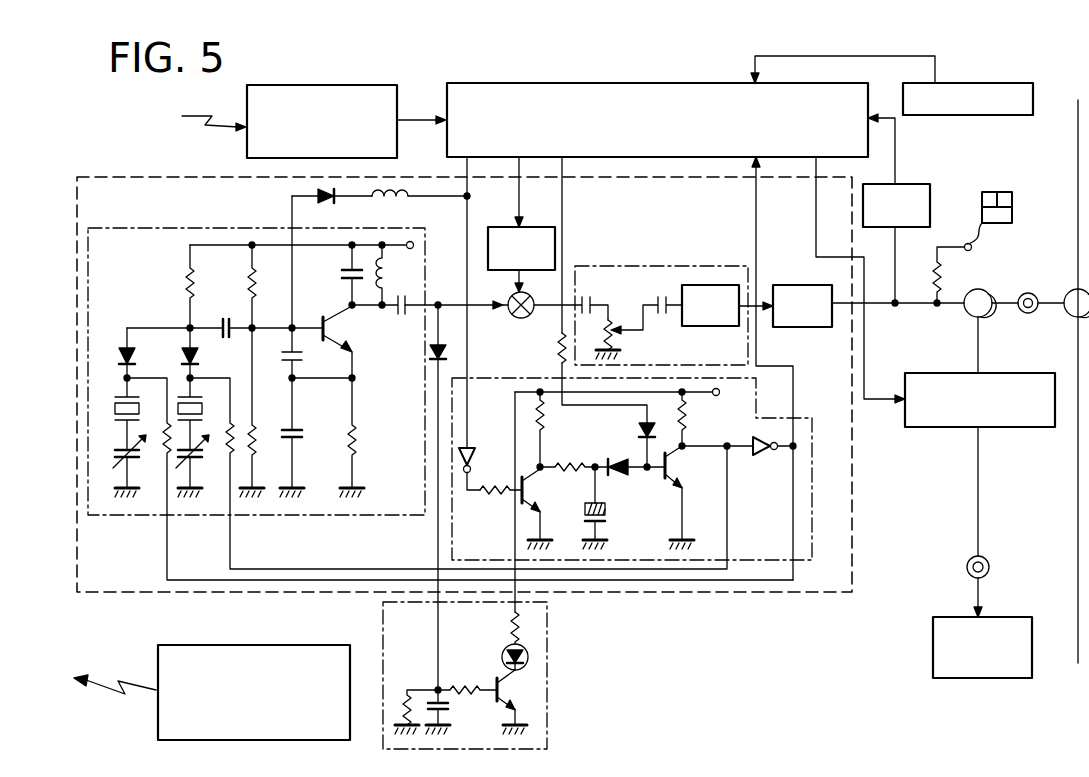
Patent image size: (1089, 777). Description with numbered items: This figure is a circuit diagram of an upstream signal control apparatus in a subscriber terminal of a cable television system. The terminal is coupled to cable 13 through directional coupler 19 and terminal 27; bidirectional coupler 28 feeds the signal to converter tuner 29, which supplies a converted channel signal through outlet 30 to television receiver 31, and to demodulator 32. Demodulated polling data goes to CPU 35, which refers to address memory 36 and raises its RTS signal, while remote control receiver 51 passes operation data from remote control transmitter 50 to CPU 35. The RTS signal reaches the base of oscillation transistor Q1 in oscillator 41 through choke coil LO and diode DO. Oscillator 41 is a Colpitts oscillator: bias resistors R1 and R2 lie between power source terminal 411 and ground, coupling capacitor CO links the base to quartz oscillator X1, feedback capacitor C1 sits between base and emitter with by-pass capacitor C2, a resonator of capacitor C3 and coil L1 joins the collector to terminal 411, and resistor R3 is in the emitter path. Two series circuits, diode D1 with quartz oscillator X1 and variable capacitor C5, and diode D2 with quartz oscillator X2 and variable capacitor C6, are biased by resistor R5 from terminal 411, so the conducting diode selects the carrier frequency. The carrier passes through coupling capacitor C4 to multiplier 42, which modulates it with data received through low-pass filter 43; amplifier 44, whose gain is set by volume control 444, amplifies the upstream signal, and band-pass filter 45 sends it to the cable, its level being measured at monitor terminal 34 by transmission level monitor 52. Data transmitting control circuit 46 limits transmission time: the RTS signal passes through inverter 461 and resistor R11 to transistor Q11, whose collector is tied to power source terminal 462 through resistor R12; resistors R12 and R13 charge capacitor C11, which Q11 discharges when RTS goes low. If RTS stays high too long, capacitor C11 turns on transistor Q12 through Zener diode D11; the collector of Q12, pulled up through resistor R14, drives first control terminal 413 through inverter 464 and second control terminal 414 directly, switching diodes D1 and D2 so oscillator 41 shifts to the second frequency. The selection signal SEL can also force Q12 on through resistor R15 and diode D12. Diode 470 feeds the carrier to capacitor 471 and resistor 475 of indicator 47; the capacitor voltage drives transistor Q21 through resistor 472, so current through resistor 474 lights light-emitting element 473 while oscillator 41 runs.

The remote control receiver 51 is at (351, 85).
The CPU 35 is at (660, 83).
The address memory 36 is at (980, 83).
The demodulator 32 is at (920, 184).
The transmission level monitor 52 is at (997, 192).
The monitor terminal 34 is at (972, 247).
The cable 13 is at (1078, 157).
The bidirectional coupler 28 is at (967, 313).
The terminal 27 is at (1030, 313).
The directional coupler 19 is at (1068, 293).
The converter tuner 29 is at (1000, 373).
The outlet 30 is at (990, 562).
The television receiver 31 is at (947, 617).
The oscillator 41 is at (195, 228).
The power source terminal 411 is at (414, 244).
The first control terminal 413 is at (167, 541).
The second control terminal 414 is at (230, 538).
The multiplier 42 is at (512, 315).
The low-pass filter 43 is at (538, 227).
The amplifier 44 is at (676, 266).
The volume control 444 is at (622, 315).
The band-pass filter 45 is at (792, 285).
The data transmitting control circuit 46 is at (764, 418).
The inverter 461 is at (471, 450).
The power source terminal 462 is at (690, 408).
The inverter 464 is at (762, 456).
The indicator 47 is at (547, 650).
The diode 470 is at (432, 362).
The capacitor 471 is at (450, 708).
The resistor 472 is at (464, 688).
The light-emitting element 473 is at (504, 650).
The resistor 474 is at (512, 614).
The resistor 475 is at (407, 695).
The remote control transmitter 50 is at (303, 645).
The diode DO is at (316, 193).
The choke coil LO is at (397, 202).
The bias resistor R1 is at (248, 275).
The bias resistor R2 is at (263, 412).
The resistor R3 is at (360, 446).
The resistor R5 is at (186, 275).
The resistor R11 is at (494, 496).
The resistor R12 is at (547, 418).
The resistor R13 is at (572, 465).
The resistor R14 is at (690, 424).
The resistor R15 is at (558, 345).
The coupling capacitor CO is at (224, 319).
The feedback capacitor C1 is at (304, 356).
The by-pass capacitor C2 is at (304, 432).
The capacitor C3 is at (342, 274).
The coupling capacitor C4 is at (402, 316).
The variable capacitor C5 is at (137, 466).
The variable capacitor C6 is at (200, 466).
The capacitor C11 is at (586, 514).
The diode D1 is at (138, 357).
The diode D2 is at (200, 357).
The Zener diode D11 is at (618, 476).
The diode D12 is at (640, 430).
The quartz oscillator X1 is at (140, 416).
The quartz oscillator X2 is at (203, 416).
The coil L1 is at (390, 266).
The oscillation transistor Q1 is at (347, 332).
The transistor Q11 is at (541, 496).
The transistor Q12 is at (680, 478).
The transistor Q21 is at (518, 691).